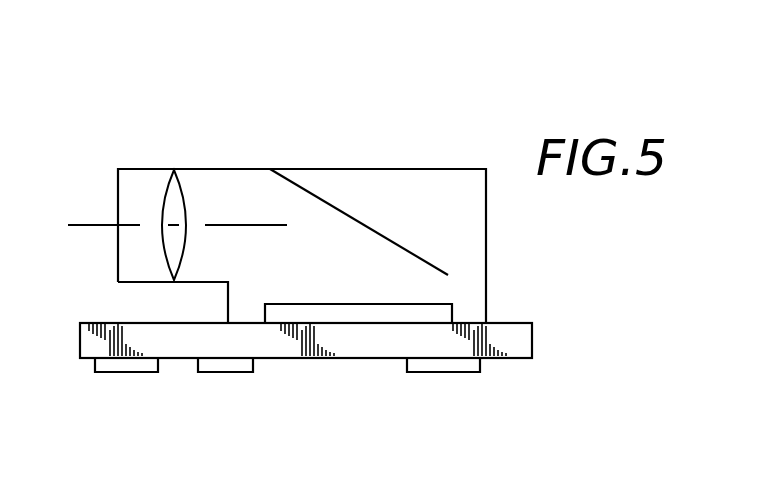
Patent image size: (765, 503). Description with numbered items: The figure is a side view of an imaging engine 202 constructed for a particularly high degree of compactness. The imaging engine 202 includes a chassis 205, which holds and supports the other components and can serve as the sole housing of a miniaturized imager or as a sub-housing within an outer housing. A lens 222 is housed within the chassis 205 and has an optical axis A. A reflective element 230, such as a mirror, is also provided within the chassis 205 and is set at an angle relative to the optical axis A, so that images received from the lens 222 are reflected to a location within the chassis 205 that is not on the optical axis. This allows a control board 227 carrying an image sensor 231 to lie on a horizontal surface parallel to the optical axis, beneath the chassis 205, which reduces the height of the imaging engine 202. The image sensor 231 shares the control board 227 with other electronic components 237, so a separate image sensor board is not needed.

The imaging engine 202 is at (138, 163).
The chassis 205 is at (118, 261).
The lens 222 is at (188, 197).
The control board 227 is at (533, 338).
The reflective element 230 is at (342, 210).
The image sensor 231 is at (372, 313).
The electronic components 237 is at (142, 372).